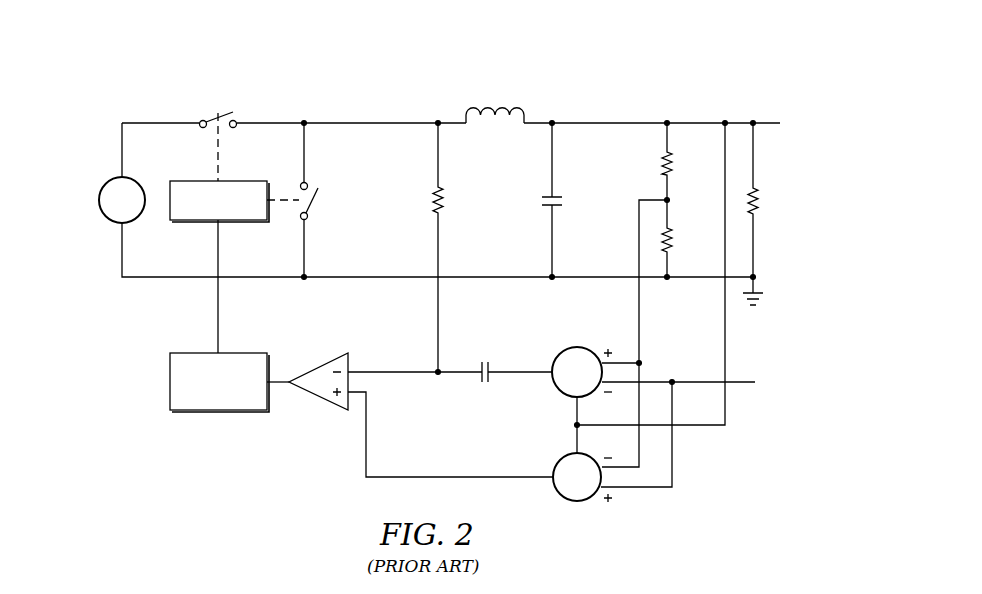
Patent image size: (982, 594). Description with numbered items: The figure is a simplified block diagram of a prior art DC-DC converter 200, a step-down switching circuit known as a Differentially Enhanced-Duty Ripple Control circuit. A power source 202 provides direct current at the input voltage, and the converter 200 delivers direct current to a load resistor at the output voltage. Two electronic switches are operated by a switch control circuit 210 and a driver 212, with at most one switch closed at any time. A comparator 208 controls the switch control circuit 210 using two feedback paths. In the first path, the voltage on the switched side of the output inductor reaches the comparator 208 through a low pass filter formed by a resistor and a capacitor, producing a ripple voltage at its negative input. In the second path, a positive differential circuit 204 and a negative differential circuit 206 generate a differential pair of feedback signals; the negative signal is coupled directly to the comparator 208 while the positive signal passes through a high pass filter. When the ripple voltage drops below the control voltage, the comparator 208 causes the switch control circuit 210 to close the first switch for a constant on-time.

The DC-DC converter 200 is at (616, 70).
The power source 202 is at (99, 200).
The positive differential circuit 204 is at (578, 347).
The negative differential circuit 206 is at (574, 501).
The comparator 208 is at (317, 397).
The switch control circuit 210 is at (170, 390).
The driver 212 is at (198, 222).